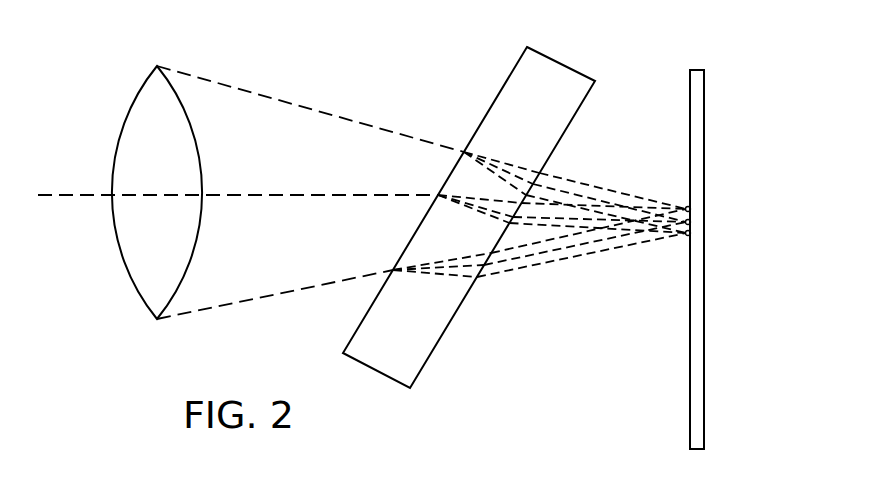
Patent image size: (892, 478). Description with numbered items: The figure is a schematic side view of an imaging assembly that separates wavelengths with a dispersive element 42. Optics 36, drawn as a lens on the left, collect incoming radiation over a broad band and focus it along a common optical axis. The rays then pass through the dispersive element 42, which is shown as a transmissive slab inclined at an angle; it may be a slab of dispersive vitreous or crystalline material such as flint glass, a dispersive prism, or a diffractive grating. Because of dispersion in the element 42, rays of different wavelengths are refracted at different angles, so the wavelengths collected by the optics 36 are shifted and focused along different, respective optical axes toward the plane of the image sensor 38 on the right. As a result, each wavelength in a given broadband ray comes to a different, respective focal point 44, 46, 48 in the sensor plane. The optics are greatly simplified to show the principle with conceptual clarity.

The optics 36 is at (148, 80).
The dispersive element 42 is at (557, 60).
The image sensor 38 is at (704, 93).
The focal point 44 is at (690, 209).
The focal point 46 is at (690, 222).
The focal point 48 is at (690, 233).